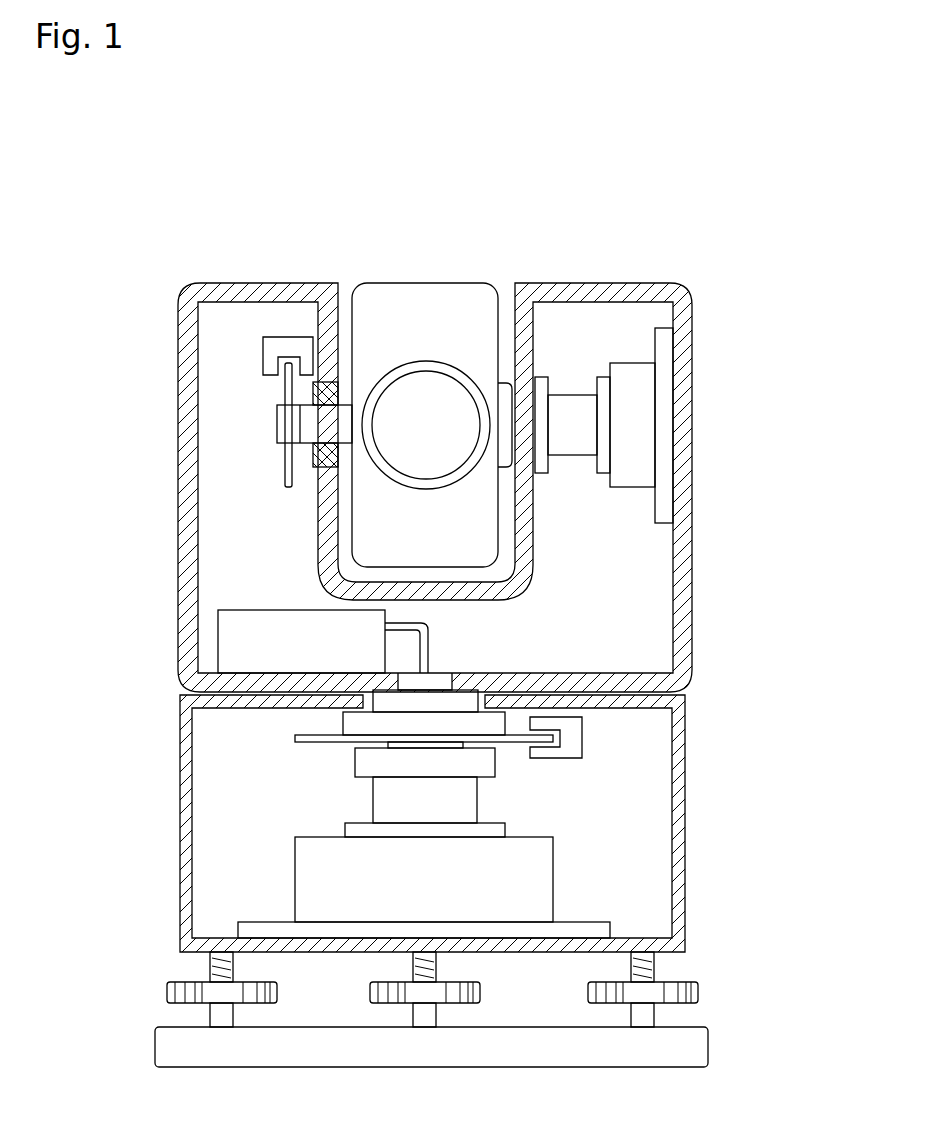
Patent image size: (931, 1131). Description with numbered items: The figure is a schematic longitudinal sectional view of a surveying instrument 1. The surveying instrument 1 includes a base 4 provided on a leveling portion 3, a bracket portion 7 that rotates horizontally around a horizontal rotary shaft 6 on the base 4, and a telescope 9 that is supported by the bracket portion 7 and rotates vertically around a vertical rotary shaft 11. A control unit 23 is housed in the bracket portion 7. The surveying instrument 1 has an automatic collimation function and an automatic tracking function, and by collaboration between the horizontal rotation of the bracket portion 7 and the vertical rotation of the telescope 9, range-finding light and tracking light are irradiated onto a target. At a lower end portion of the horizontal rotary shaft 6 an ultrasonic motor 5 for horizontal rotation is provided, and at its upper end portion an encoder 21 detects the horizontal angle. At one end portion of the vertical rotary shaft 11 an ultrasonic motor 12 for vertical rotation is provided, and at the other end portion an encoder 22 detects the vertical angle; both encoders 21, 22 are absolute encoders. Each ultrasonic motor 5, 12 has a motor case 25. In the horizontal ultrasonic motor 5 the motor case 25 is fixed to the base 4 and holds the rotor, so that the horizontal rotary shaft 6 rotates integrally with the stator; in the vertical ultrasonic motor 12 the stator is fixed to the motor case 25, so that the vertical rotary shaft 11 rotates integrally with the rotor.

The surveying instrument 1 is at (757, 178).
The leveling portion 3 is at (705, 985).
The base 4 is at (690, 888).
The ultrasonic motor 5 is at (557, 847).
The horizontal rotary shaft 6 is at (487, 697).
The bracket portion 7 is at (692, 557).
The telescope 9 is at (380, 283).
The vertical rotary shaft 11 is at (275, 416).
The ultrasonic motor 12 is at (630, 360).
The encoder 21 is at (590, 735).
The encoder 22 is at (256, 332).
The control unit 23 is at (237, 610).
The motor case 25 is at (635, 410).